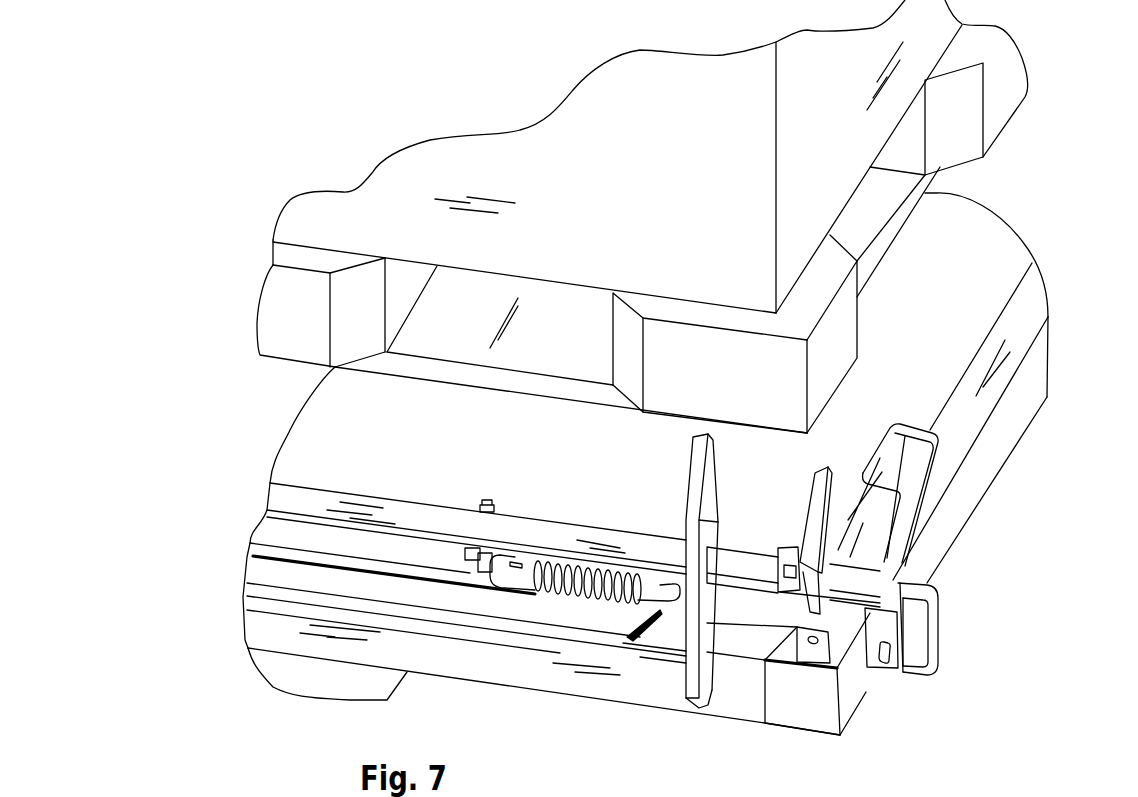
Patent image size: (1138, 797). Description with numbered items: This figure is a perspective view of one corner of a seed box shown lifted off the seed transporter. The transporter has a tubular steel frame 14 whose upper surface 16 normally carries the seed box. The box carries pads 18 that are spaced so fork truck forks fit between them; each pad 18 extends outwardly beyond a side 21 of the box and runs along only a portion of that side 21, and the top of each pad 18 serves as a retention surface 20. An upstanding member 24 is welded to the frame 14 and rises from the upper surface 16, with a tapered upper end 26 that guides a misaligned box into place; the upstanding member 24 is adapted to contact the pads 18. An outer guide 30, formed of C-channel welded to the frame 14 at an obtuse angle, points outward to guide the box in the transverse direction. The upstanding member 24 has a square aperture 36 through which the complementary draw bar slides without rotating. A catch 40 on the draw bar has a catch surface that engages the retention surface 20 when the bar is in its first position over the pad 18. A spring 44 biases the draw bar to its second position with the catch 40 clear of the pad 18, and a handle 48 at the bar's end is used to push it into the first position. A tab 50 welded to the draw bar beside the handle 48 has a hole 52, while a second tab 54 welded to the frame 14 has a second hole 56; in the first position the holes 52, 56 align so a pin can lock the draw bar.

The frame 14 is at (1012, 427).
The upper surface 16 is at (965, 268).
The pad 18 is at (698, 358).
The retention surface 20 is at (822, 280).
The side 21 is at (630, 181).
The upstanding member 24 is at (655, 645).
The tapered upper end 26 is at (698, 433).
The outer guide 30 is at (887, 470).
The aperture 36 is at (712, 556).
The catch 40 is at (815, 470).
The spring 44 is at (560, 595).
The handle 48 is at (933, 618).
The tab 50 is at (897, 638).
The hole 52 is at (883, 668).
The second tab 54 is at (813, 653).
The second hole 56 is at (810, 641).